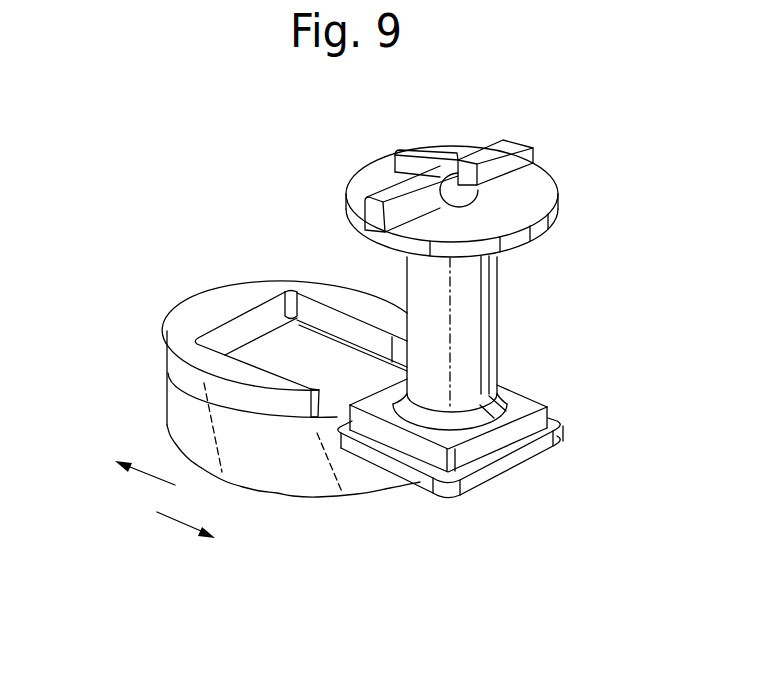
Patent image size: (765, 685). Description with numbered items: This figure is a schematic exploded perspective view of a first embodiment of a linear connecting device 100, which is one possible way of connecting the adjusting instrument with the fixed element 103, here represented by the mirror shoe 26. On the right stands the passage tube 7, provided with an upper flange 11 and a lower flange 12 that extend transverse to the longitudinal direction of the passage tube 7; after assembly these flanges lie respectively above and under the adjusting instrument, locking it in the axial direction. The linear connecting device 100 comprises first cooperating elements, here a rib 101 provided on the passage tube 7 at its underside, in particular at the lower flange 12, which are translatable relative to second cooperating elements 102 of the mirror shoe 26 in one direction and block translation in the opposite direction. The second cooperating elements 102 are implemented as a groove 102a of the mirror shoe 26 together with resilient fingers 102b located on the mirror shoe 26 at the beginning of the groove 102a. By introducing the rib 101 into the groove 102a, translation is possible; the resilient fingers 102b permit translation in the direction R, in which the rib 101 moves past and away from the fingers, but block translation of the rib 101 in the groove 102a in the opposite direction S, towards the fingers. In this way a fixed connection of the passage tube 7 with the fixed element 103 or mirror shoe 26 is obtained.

The linear connecting device 100 is at (267, 233).
The second cooperating elements 102 is at (269, 330).
The groove 102a is at (250, 342).
The resilient fingers 102b is at (300, 405).
The fixed element 103 is at (178, 400).
The mirror shoe 26 is at (185, 424).
The upper flange 11 is at (535, 188).
The passage tube 7 is at (472, 320).
The lower flange 12 is at (537, 422).
The rib 101 is at (500, 470).
The direction R is at (150, 477).
The direction S is at (171, 519).